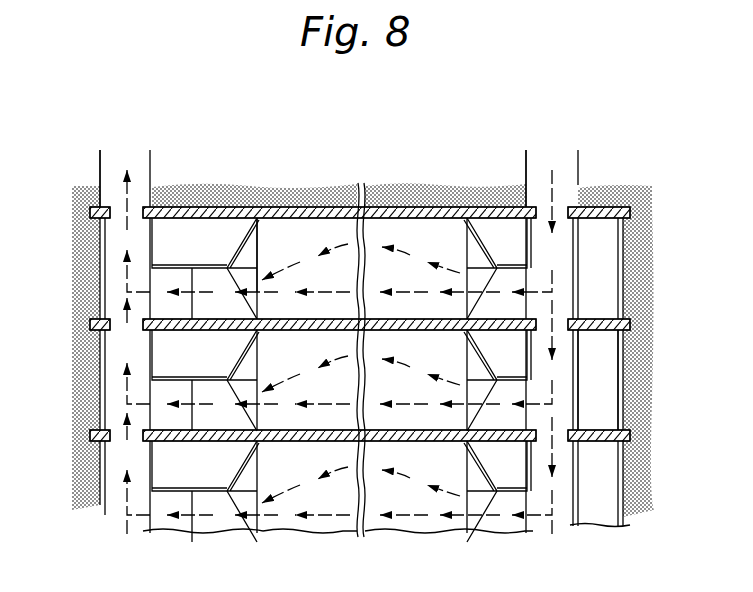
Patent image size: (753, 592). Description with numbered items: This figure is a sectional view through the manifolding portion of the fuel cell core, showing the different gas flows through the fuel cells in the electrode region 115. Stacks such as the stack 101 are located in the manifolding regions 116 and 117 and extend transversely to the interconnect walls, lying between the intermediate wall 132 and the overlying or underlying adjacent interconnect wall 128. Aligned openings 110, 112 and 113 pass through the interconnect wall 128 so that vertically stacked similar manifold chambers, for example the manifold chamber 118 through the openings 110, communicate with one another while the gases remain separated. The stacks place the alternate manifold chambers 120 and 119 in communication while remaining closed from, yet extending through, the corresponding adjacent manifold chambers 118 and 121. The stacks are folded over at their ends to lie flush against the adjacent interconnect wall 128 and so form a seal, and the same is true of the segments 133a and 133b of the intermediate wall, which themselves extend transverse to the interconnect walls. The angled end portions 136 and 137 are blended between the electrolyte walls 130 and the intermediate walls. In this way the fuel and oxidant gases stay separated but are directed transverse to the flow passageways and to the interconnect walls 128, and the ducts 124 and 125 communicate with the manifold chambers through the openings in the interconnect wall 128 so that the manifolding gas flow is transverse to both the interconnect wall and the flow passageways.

The stack 101 is at (518, 346).
The opening 110 is at (107, 332).
The opening 112 is at (570, 213).
The opening 113 is at (290, 239).
The electrode region 115 is at (337, 535).
The manifolding region 116 is at (177, 535).
The manifolding region 117 is at (606, 525).
The manifold chamber 118 is at (111, 266).
The manifold chamber 119 is at (500, 188).
The manifold chamber 120 is at (183, 237).
The manifold chamber 121 is at (607, 260).
The duct 124 is at (99, 163).
The duct 125 is at (525, 172).
The interconnect wall 128 is at (92, 438).
The electrolyte wall 130 is at (403, 218).
The intermediate wall 132 is at (177, 267).
The segment of intermediate wall 133a is at (603, 422).
The segment of intermediate wall 133b is at (628, 442).
The angled end portion 136 is at (258, 444).
The angled end portion 137 is at (483, 463).